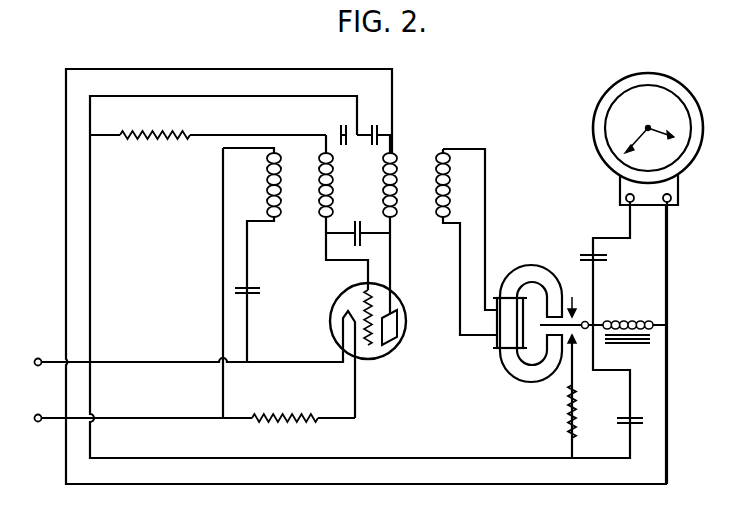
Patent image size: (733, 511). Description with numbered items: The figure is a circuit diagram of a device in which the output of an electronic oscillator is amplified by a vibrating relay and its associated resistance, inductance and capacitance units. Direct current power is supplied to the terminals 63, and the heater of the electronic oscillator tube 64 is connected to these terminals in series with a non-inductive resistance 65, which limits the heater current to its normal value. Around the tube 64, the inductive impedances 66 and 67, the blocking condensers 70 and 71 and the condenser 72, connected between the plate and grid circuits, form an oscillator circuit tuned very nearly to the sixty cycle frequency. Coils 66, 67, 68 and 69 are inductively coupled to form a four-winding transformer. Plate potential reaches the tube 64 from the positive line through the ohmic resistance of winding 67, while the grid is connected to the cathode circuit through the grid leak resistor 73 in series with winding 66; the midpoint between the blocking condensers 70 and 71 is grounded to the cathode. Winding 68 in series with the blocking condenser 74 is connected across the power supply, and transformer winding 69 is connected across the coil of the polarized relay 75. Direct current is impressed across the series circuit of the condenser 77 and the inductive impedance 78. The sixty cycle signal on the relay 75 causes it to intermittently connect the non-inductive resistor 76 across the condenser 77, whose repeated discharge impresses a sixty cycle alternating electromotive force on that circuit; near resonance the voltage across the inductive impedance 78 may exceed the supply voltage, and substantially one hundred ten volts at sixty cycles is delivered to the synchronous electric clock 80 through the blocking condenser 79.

The terminals 63 is at (36, 366).
The electronic oscillator tube 64 is at (404, 291).
The non-inductive resistance 65 is at (290, 425).
The inductive impedance 66 is at (337, 171).
The inductive impedance 67 is at (400, 174).
The winding 68 is at (284, 171).
The transformer winding 69 is at (452, 174).
The blocking condenser 70 is at (338, 125).
The blocking condenser 71 is at (374, 123).
The condenser 72 is at (357, 218).
The grid leak resistor 73 is at (144, 140).
The blocking condenser 74 is at (262, 288).
The polarized relay 75 is at (531, 258).
The non-inductive resistor 76 is at (562, 415).
The condenser 77 is at (622, 415).
The inductive impedance 78 is at (629, 318).
The blocking condenser 79 is at (614, 258).
The synchronous electric clock 80 is at (592, 115).